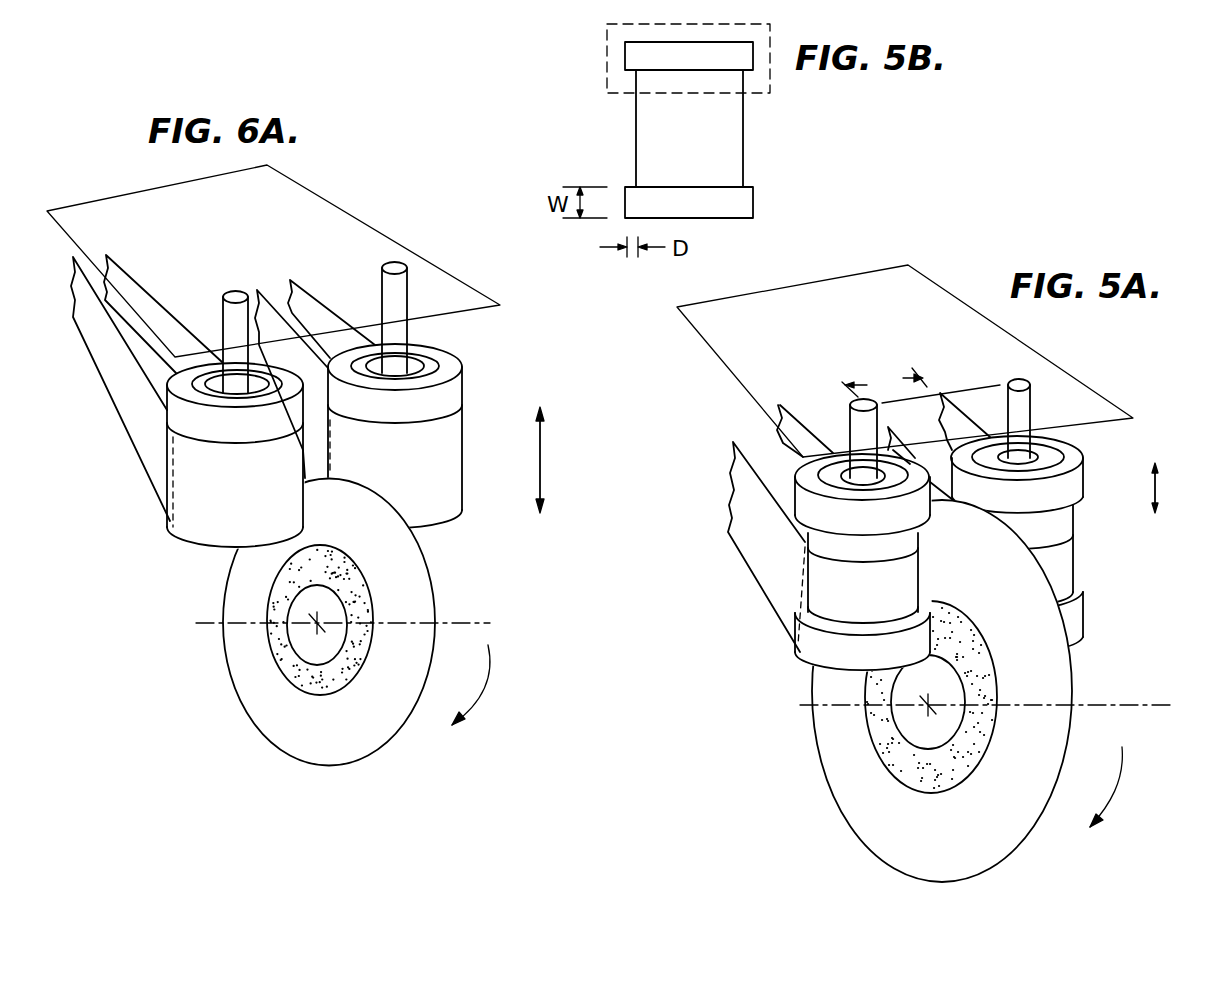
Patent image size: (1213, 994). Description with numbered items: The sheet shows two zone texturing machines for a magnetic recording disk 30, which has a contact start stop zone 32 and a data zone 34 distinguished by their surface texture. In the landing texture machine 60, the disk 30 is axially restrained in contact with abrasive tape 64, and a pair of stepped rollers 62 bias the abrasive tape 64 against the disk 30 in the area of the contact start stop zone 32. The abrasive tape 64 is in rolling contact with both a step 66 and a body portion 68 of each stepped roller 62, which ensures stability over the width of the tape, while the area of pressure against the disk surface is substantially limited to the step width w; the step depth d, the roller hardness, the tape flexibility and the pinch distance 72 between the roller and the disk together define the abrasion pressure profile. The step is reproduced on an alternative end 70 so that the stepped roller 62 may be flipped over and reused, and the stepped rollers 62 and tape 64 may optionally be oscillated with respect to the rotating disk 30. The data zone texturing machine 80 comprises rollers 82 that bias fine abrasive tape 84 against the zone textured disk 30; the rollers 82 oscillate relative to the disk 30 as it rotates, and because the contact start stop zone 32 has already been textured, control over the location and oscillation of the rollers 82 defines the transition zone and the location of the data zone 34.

In FIG. 6A, the magnetic recording disk 30 is at (355, 634).
In FIG. 5A, the magnetic recording disk 30 is at (987, 691).
In FIG. 6A, the contact start stop zone 32 is at (293, 686).
In FIG. 5A, the contact start stop zone 32 is at (905, 790).
In FIG. 6A, the data zone 34 is at (372, 717).
In FIG. 5A, the landing texture machine 60 is at (1108, 350).
In FIG. 5A, the stepped roller 62 is at (817, 643).
In FIG. 5A, the abrasive tape 64 is at (773, 578).
In FIG. 5B, the step 66 is at (750, 187).
In FIG. 5B, the body portion 68 is at (745, 131).
In FIG. 5B, the alternative end 70 is at (598, 53).
In FIG. 5A, the pinch distance 72 is at (884, 382).
In FIG. 6A, the data zone texturing machine 80 is at (367, 202).
In FIG. 6A, the roller 82 is at (213, 512).
In FIG. 6A, the fine abrasive tape 84 is at (142, 427).